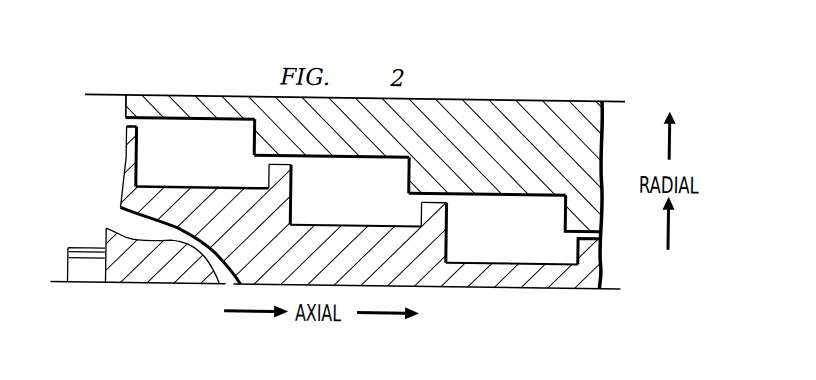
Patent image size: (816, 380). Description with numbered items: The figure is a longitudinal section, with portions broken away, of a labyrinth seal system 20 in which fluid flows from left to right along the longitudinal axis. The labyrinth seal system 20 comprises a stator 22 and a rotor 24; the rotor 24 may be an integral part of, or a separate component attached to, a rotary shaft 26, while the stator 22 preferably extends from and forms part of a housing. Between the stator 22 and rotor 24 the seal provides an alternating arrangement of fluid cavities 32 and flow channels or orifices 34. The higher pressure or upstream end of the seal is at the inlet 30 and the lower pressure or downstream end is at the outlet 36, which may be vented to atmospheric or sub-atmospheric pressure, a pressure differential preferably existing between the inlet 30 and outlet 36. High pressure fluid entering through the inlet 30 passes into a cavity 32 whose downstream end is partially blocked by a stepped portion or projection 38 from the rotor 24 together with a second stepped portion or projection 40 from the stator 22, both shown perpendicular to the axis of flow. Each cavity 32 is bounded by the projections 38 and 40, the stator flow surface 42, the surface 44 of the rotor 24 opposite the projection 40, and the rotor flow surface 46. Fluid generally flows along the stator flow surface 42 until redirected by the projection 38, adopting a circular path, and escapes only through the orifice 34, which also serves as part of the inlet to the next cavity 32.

The labyrinth seal system 20 is at (597, 66).
The stator 22 is at (473, 97).
The rotor 24 is at (477, 283).
The rotary shaft 26 is at (87, 277).
The inlet 30 is at (127, 118).
The fluid cavity 32 is at (184, 156).
The flow channel or orifice 34 is at (294, 161).
The outlet 36 is at (604, 232).
The stepped portion or projection 38 is at (256, 142).
The second stepped portion or projection 40 is at (270, 171).
The stator flow surface 42 is at (173, 117).
The surface opposite projection 44 is at (137, 158).
The rotor flow surface 46 is at (183, 186).